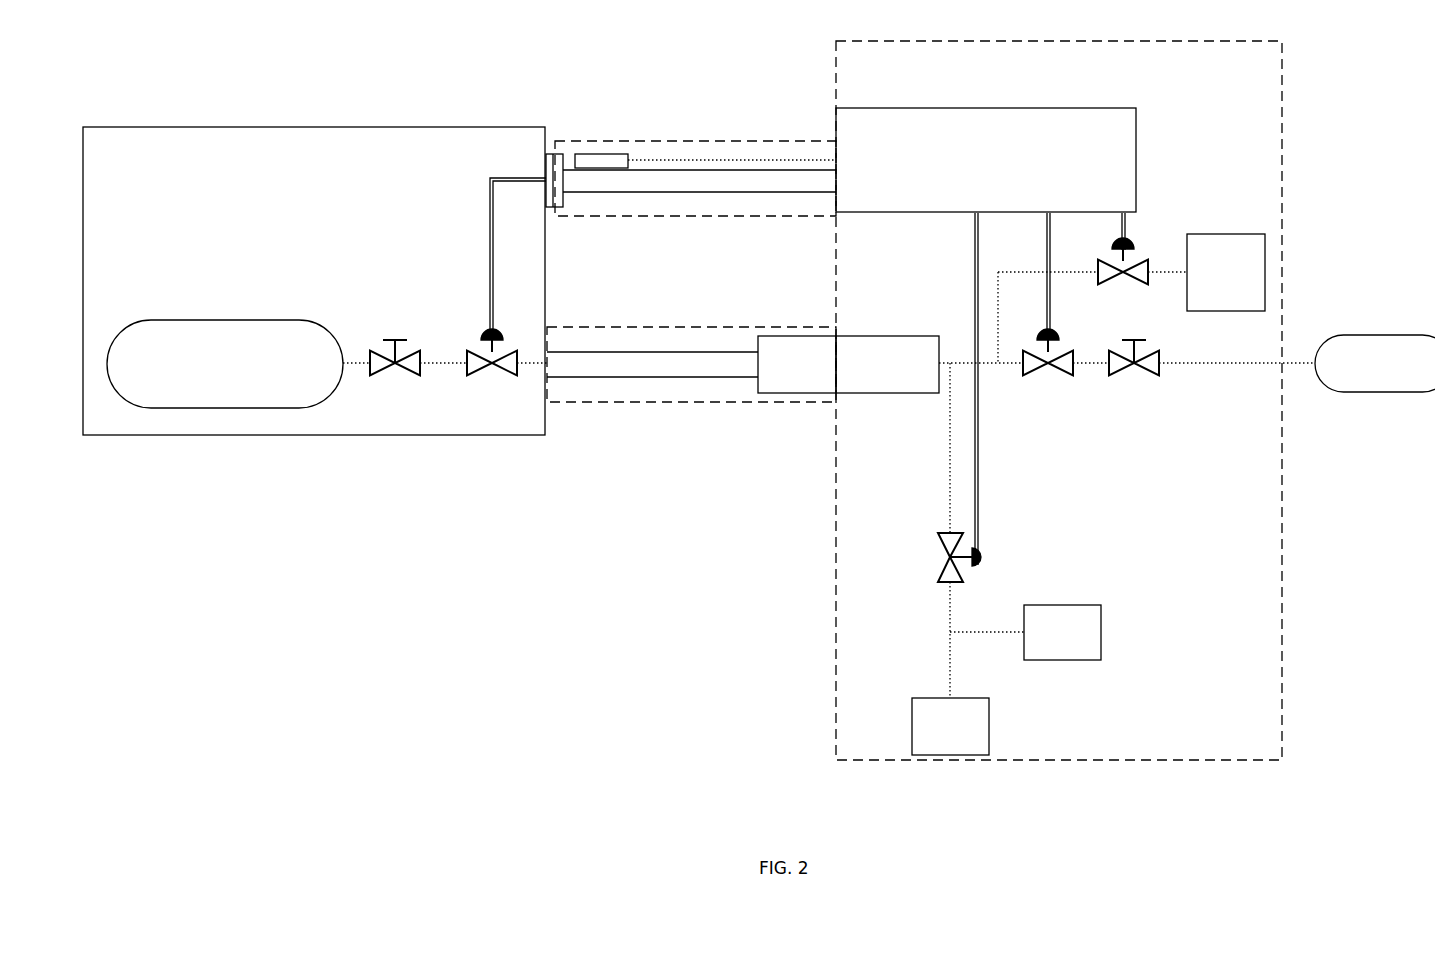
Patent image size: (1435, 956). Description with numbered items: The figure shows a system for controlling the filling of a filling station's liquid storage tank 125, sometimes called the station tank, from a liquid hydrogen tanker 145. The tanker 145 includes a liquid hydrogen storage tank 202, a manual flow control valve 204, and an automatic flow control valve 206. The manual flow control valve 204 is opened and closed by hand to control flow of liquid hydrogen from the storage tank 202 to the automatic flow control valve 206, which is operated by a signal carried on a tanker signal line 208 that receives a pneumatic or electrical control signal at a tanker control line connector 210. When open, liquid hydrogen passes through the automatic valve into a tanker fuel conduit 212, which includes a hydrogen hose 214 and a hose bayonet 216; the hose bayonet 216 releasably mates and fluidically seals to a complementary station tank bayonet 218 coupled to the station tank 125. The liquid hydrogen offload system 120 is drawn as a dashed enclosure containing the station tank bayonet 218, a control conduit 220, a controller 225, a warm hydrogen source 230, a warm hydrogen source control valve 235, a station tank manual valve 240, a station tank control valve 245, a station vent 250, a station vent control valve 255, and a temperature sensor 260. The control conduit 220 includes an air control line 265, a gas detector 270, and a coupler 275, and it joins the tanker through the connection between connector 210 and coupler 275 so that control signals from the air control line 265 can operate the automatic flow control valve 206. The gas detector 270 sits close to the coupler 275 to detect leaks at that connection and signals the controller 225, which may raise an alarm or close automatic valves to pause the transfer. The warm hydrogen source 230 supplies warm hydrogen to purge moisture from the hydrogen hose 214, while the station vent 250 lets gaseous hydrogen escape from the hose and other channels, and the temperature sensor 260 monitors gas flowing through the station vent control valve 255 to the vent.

The liquid hydrogen offload system 120 is at (903, 40).
The liquid storage tank 125 is at (1375, 363).
The tanker 145 is at (314, 281).
The liquid hydrogen storage tank 202 is at (225, 364).
The manual flow control valve 204 is at (385, 375).
The automatic flow control valve 206 is at (478, 375).
The tanker signal line 208 is at (490, 240).
The tanker control line connector 210 is at (551, 152).
The tanker fuel conduit 212 is at (683, 327).
The hydrogen hose 214 is at (652, 364).
The hose bayonet 216 is at (797, 364).
The station tank bayonet 218 is at (887, 364).
The control conduit 220 is at (697, 141).
The controller 225 is at (986, 160).
The warm hydrogen source 230 is at (1226, 272).
The warm hydrogen source control valve 235 is at (1113, 285).
The station tank manual valve 240 is at (1125, 375).
The station tank control valve 245 is at (1040, 375).
The station vent 250 is at (989, 718).
The station vent control valve 255 is at (950, 530).
The temperature sensor 260 is at (1062, 605).
The air control line 265 is at (699, 181).
The gas detector 270 is at (596, 154).
The coupler 275 is at (558, 152).